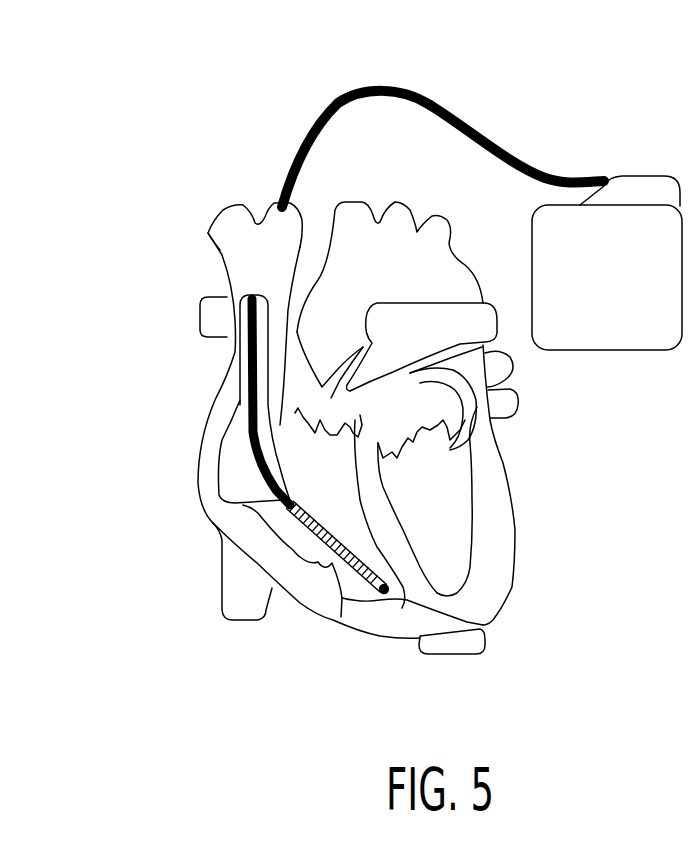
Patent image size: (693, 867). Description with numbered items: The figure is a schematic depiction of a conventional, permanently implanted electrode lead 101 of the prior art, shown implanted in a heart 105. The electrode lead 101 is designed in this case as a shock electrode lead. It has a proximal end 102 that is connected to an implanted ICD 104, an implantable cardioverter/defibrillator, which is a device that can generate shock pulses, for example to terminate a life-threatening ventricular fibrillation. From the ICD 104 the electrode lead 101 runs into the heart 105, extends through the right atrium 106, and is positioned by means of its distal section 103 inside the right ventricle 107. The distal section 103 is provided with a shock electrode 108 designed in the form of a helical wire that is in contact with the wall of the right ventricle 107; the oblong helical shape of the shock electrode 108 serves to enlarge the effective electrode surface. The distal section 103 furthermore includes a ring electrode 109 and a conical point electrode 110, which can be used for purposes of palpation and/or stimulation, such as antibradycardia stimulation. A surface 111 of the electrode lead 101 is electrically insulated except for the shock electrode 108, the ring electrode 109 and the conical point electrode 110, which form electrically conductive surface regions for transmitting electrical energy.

The electrode lead 101 is at (322, 113).
The proximal end 102 is at (603, 180).
The distal section 103 is at (238, 410).
The ICD 104 is at (640, 289).
The heart 105 is at (212, 523).
The right atrium 106 is at (235, 463).
The right ventricle 107 is at (293, 550).
The shock electrode 108 is at (342, 599).
The ring electrode 109 is at (385, 597).
The conical point electrode 110 is at (483, 625).
The surface 111 is at (455, 108).